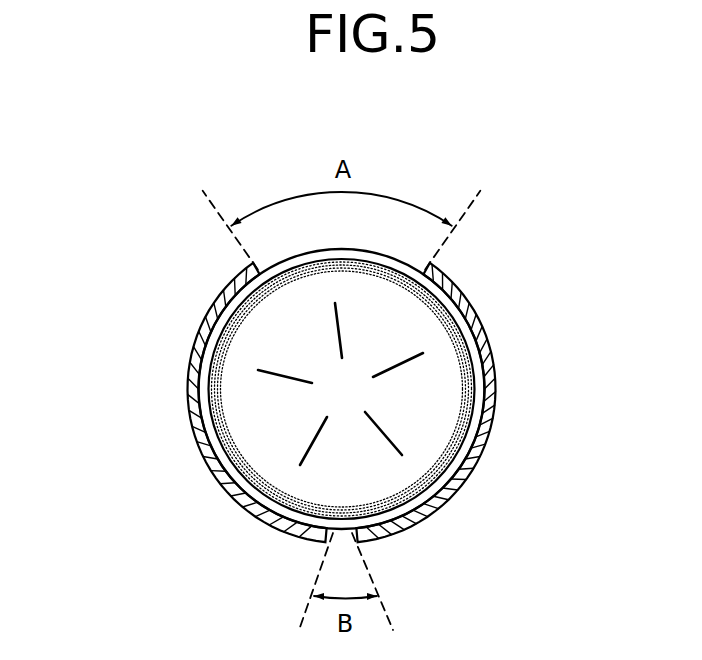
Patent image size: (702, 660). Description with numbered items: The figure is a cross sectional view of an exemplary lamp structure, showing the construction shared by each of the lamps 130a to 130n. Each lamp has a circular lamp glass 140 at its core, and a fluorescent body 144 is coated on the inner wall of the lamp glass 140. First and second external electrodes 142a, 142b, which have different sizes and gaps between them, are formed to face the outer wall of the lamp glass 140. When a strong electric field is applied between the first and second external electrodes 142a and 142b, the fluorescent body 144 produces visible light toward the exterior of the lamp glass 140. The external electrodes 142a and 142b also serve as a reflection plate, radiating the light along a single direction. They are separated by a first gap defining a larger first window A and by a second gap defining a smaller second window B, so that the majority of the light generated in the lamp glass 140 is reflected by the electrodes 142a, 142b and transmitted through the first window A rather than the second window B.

The lamp 130a is at (308, 332).
The lamp 130n is at (213, 152).
The lamp glass 140 is at (455, 289).
The first external electrode 142a is at (207, 453).
The second external electrode 142b is at (483, 330).
The fluorescent body 144 is at (467, 384).